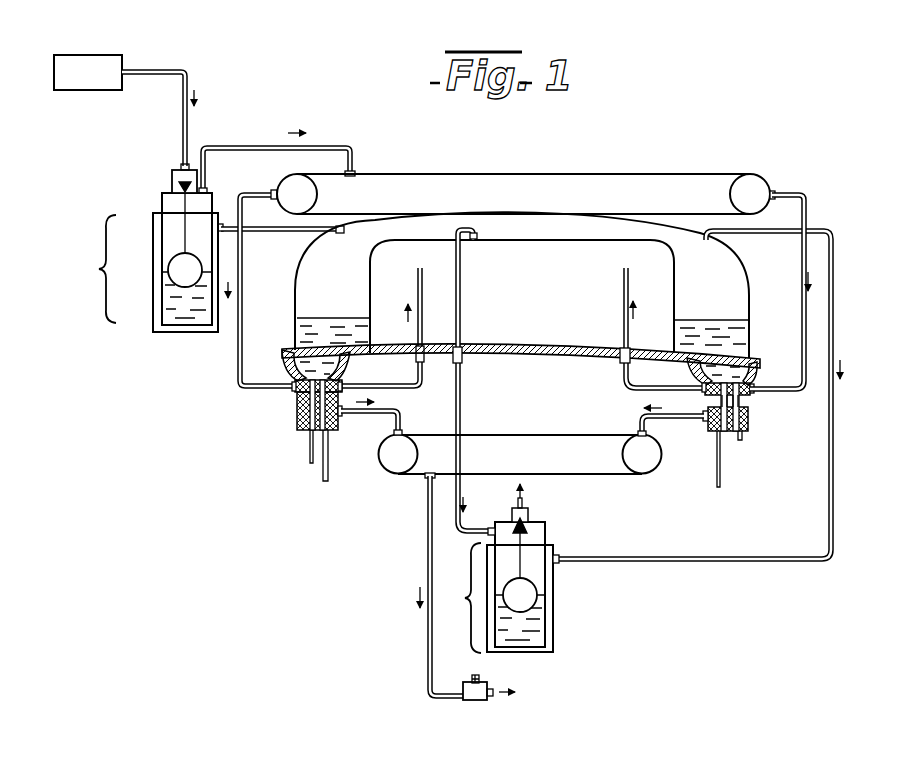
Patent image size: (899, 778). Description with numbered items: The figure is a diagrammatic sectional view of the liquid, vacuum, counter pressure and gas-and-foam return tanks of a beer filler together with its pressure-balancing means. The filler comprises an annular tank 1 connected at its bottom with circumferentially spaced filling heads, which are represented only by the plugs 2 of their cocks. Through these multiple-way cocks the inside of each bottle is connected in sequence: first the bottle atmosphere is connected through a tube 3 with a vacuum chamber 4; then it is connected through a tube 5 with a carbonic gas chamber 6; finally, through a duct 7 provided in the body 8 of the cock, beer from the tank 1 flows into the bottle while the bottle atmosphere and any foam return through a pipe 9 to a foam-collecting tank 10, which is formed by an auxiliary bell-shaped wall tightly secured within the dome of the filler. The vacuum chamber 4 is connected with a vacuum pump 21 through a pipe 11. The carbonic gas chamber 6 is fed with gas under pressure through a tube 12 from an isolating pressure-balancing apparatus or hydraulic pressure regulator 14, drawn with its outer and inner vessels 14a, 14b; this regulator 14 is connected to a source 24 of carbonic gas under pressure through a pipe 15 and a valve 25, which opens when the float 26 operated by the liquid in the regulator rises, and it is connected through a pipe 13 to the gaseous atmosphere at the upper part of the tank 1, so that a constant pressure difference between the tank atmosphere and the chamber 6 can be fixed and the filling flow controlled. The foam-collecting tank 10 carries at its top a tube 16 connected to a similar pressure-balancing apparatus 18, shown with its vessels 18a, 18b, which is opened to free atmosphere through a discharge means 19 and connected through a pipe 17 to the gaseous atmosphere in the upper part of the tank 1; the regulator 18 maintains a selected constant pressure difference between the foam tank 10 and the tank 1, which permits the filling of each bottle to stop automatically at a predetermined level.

The annular tank 1 is at (733, 283).
The plug 2 is at (297, 412).
The tube 3 is at (676, 417).
The vacuum chamber 4 is at (650, 466).
The tube 5 is at (238, 373).
The carbonic gas chamber 6 is at (757, 186).
The duct 7 is at (340, 383).
The body of the cock 8 is at (702, 398).
The pipe 9 is at (622, 378).
The foam-collecting tank 10 is at (507, 336).
The pipe 11 is at (430, 547).
The tube 12 is at (260, 148).
The pipe 13 is at (272, 234).
The hydraulic pressure regulator 14 is at (140, 247).
The outer vessel 14a is at (159, 258).
The inner vessel 14b is at (167, 233).
The pipe 15 is at (183, 128).
The tube 16 is at (458, 402).
The pipe 17 is at (834, 421).
The pressure-balancing apparatus 18 is at (519, 568).
The outer vessel 18a is at (553, 626).
The inner vessel 18b is at (546, 580).
The discharge means 19 is at (529, 514).
The vacuum pump 21 is at (465, 700).
The source of carbonic gas 24 is at (122, 60).
The valve 25 is at (175, 183).
The float 26 is at (178, 277).